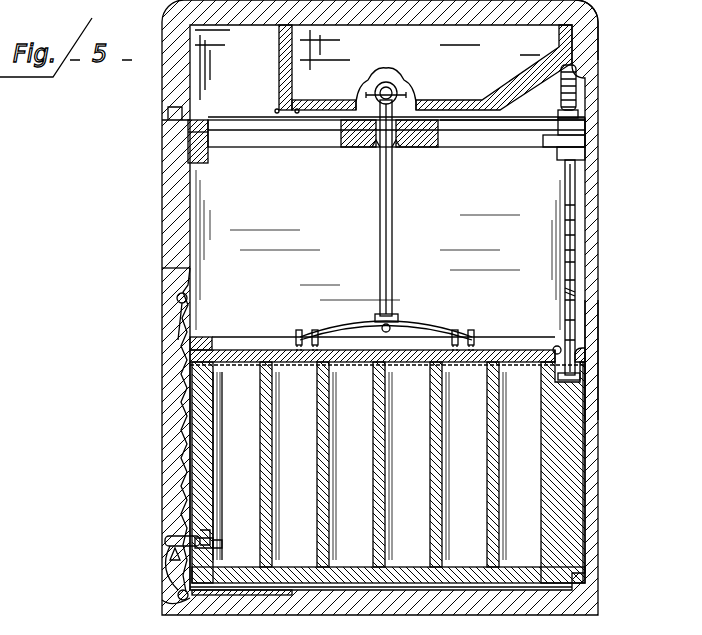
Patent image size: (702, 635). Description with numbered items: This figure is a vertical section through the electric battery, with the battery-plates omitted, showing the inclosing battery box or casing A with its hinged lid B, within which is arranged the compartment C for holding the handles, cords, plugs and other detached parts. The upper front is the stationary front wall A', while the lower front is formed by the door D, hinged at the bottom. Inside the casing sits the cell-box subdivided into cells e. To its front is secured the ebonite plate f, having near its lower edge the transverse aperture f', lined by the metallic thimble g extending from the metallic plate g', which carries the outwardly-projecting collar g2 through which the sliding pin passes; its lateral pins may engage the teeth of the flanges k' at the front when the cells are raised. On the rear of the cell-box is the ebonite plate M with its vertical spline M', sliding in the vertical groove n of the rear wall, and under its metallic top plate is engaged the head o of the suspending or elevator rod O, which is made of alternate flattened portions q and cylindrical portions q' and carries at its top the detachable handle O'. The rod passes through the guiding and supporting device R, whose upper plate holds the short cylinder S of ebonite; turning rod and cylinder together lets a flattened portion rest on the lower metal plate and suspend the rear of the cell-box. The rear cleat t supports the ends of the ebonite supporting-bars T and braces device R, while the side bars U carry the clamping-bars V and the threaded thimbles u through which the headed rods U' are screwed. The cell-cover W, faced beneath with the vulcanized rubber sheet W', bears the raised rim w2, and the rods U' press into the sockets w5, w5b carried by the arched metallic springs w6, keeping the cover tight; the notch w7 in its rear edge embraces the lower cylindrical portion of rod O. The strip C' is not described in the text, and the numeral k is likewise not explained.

The stationary front wall A' is at (367, 307).
The battery box or casing A is at (605, 360).
The hinged lid B is at (595, 30).
The door D is at (159, 436).
The toothed flanges of plate K k' is at (154, 360).
The compartment C is at (423, 69).
The clamping-bars V is at (212, 69).
The supporting-bars T is at (300, 133).
The bar bearing block k is at (200, 152).
The internally-threaded metallic thimble u is at (373, 148).
The side bars U is at (512, 149).
The headed rods U' is at (406, 208).
The sockets w5 is at (393, 318).
The arched metallic springs w6 is at (440, 332).
The cell-cover W is at (387, 338).
The vulcanized rubber sheet W' is at (383, 327).
The raised rim w2 is at (207, 337).
The sockets w5b is at (556, 346).
The ebonite plate M is at (588, 472).
The vertical spline M' is at (609, 472).
The cells e is at (387, 476).
The ebonite plate f is at (224, 466).
The bottom strip C' is at (277, 612).
The outwardly-projecting collar g2 is at (176, 541).
The metallic plate g' is at (220, 518).
The metallic bushing or thimble g is at (214, 528).
The transverse aperture f' is at (226, 538).
The detachable handle O' is at (597, 87).
The short cylinder S is at (578, 128).
The guiding and supporting device R is at (583, 143).
The rear cleat t is at (583, 157).
The suspending or elevator rod O is at (597, 267).
The vertical groove n is at (580, 250).
The flattened portions q is at (595, 272).
The cylindrical portions q' is at (600, 291).
The notch w7 is at (586, 363).
The head of elevator-rod o is at (581, 377).